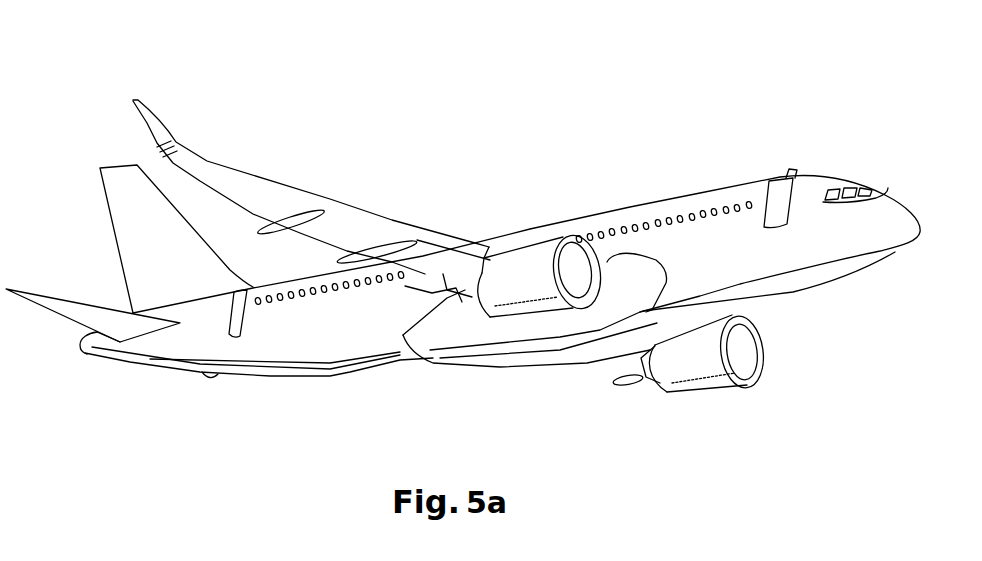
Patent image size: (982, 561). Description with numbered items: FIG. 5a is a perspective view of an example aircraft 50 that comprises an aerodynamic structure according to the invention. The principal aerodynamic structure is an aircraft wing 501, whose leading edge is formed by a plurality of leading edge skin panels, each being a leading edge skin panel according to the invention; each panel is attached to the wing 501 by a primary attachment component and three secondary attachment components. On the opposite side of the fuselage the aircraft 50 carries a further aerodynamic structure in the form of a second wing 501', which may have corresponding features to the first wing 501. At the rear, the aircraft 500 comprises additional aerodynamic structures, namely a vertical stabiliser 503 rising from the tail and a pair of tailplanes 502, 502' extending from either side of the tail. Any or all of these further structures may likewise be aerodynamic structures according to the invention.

The aircraft 50 is at (575, 83).
The aircraft 500 is at (348, 327).
The aircraft wing 501 is at (369, 208).
The second wing 501' is at (585, 361).
The tailplane 502 is at (93, 357).
The tailplane 502' is at (181, 412).
The vertical stabiliser 503 is at (135, 225).